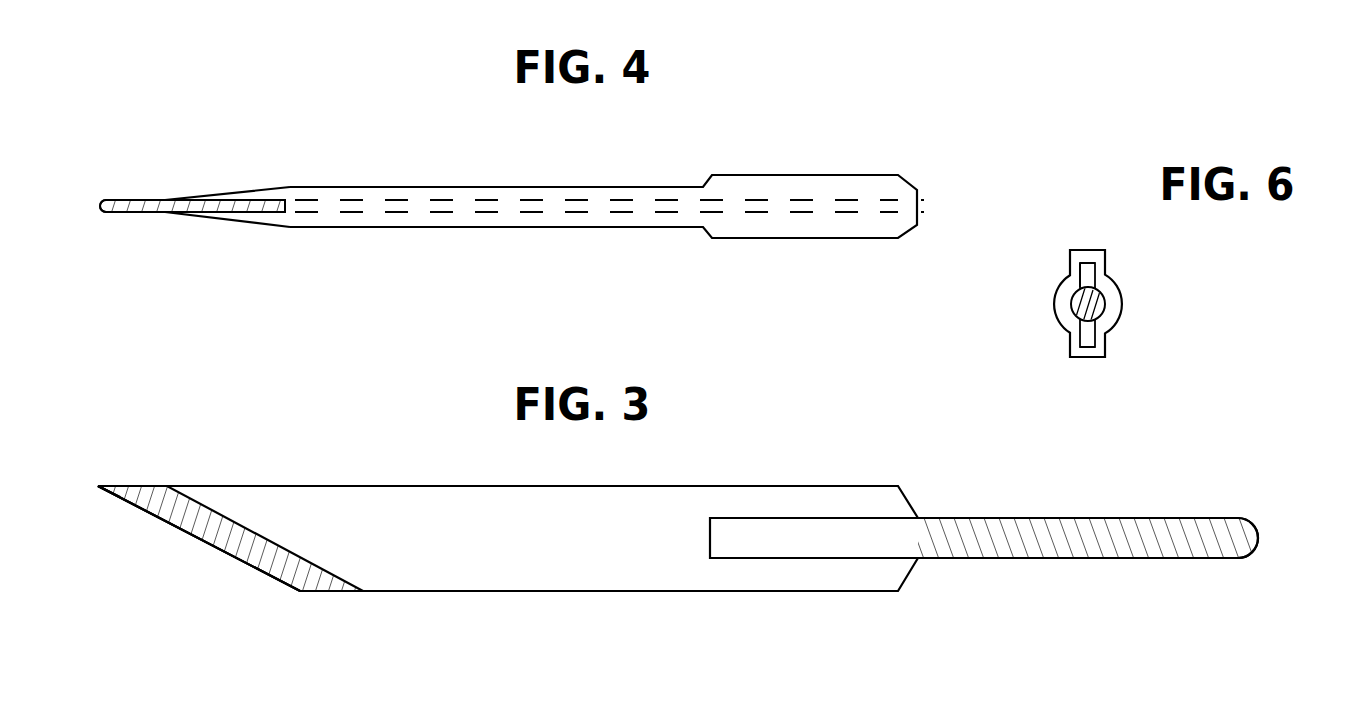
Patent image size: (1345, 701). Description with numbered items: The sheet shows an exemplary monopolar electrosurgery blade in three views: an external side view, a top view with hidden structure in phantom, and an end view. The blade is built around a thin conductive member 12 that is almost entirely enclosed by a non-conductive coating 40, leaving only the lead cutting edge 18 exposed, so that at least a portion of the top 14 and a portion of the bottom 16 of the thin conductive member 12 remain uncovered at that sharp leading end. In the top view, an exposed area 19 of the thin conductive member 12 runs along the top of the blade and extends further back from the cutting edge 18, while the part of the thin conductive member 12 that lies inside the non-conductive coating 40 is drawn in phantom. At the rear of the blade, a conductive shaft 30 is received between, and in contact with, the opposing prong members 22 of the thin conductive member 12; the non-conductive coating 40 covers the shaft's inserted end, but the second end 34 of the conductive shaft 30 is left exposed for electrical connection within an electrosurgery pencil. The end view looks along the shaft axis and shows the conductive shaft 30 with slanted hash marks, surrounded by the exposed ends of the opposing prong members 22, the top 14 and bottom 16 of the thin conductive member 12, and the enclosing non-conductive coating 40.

In FIG. 4, the thin conductive member 12 is at (125, 216).
In FIG. 3, the thin conductive member 12 is at (160, 503).
In FIG. 6, the thin conductive member 12 is at (1078, 277).
In FIG. 4, the top of the thin conductive member 14 is at (140, 200).
In FIG. 3, the top of the thin conductive member 14 is at (137, 484).
In FIG. 6, the top of the thin conductive member 14 is at (1087, 277).
In FIG. 3, the bottom of the thin conductive member 16 is at (333, 592).
In FIG. 6, the bottom of the thin conductive member 16 is at (1082, 348).
In FIG. 3, the lead cutting edge 18 is at (212, 550).
In FIG. 4, the exposed area 19 is at (213, 205).
In FIG. 6, the opposing prong members 22 is at (1098, 268).
In FIG. 3, the conductive shaft 30 is at (1055, 538).
In FIG. 6, the conductive shaft 30 is at (1095, 306).
In FIG. 3, the second end of the conductive shaft 34 is at (1235, 535).
In FIG. 4, the non-conductive coating 40 is at (735, 183).
In FIG. 3, the non-conductive coating 40 is at (560, 545).
In FIG. 6, the non-conductive coating 40 is at (1062, 302).